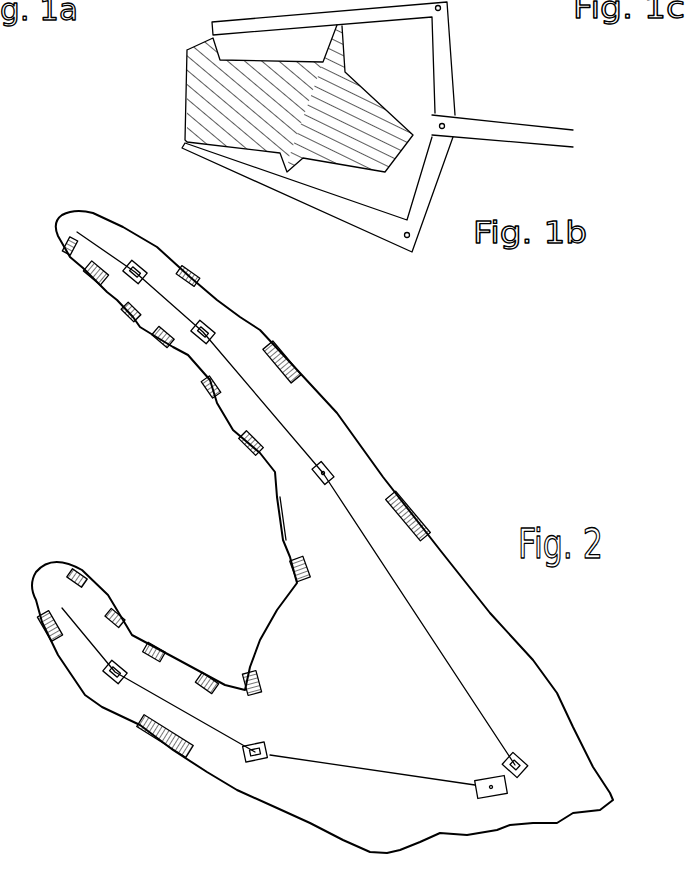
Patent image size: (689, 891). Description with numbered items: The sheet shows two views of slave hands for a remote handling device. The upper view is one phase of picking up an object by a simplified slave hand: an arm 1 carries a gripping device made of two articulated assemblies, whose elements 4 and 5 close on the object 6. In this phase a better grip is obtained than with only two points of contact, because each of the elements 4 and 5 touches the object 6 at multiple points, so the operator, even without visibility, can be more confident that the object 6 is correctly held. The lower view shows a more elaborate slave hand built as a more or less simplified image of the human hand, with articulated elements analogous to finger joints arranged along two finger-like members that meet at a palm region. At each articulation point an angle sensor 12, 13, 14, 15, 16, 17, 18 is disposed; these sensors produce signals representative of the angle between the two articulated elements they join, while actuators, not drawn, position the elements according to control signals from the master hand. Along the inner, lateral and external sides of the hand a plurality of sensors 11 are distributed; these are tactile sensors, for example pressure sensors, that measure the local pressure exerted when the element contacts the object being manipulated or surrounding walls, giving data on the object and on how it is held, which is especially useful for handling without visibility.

In FIG. 1B, the arm 1 is at (500, 127).
In FIG. 1B, the gripping element 4 is at (315, 13).
In FIG. 1B, the gripping element 5 is at (272, 182).
In FIG. 1B, the object 6 is at (203, 88).
In FIG. 2, the pressure sensors 11 is at (243, 437).
In FIG. 2, the angle sensor 12 is at (128, 262).
In FIG. 2, the angle sensor 13 is at (205, 327).
In FIG. 2, the angle sensor 14 is at (318, 463).
In FIG. 2, the angle sensor 15 is at (110, 682).
In FIG. 2, the angle sensor 16 is at (253, 763).
In FIG. 2, the angle sensor 17 is at (520, 757).
In FIG. 2, the angle sensor 18 is at (495, 793).